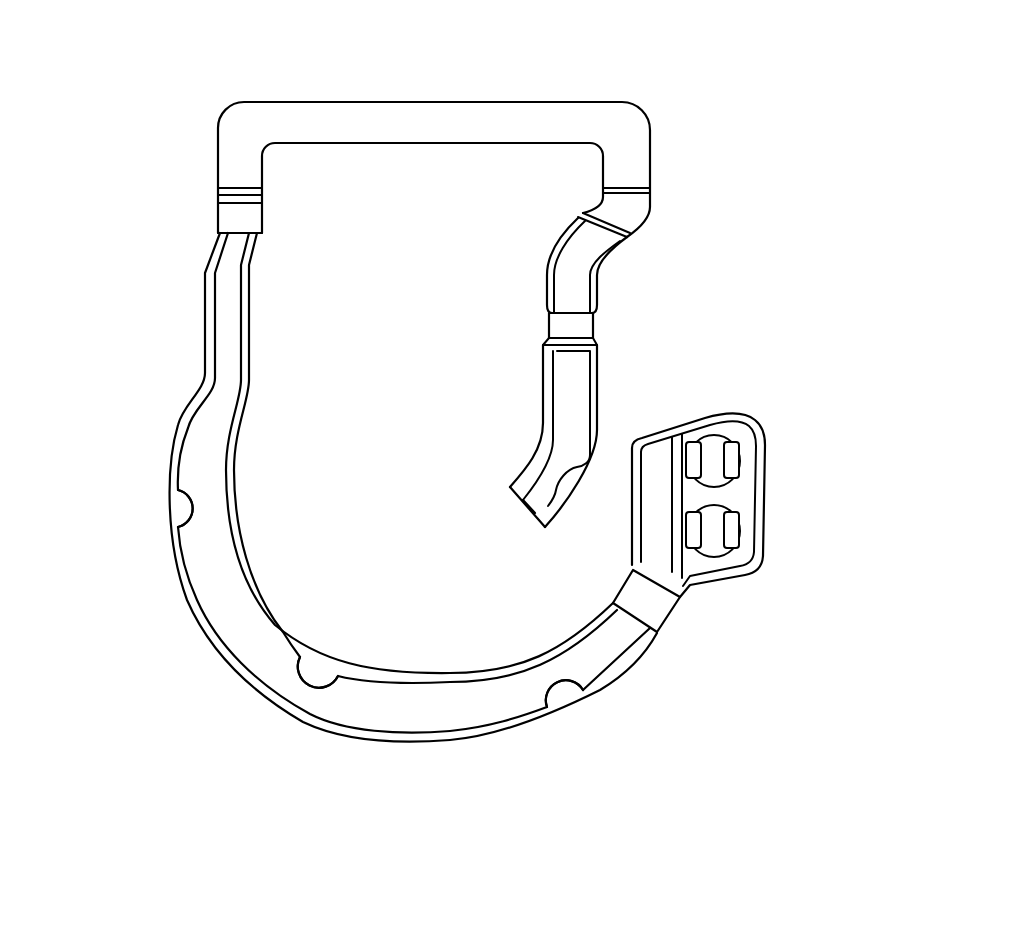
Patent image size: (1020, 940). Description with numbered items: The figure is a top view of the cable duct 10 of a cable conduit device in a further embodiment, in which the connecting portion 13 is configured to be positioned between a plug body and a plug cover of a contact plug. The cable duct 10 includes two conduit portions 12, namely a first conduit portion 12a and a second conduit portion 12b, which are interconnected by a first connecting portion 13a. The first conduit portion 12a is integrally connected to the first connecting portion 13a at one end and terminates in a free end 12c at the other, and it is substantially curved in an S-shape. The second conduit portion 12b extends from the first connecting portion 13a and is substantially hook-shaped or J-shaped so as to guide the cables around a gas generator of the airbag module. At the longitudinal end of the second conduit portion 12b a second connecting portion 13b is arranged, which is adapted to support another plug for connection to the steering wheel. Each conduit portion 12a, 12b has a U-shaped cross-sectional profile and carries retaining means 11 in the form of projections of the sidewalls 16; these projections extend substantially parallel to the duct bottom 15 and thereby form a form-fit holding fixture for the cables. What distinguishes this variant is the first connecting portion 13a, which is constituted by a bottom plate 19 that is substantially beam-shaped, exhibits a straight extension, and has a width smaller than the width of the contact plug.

The cable duct 10 is at (752, 231).
The retaining means 11 is at (575, 327).
The conduit portions 12 is at (393, 509).
The first conduit portion 12a is at (573, 294).
The second conduit portion 12b is at (184, 583).
The free end 12c is at (533, 504).
The connecting portion 13 is at (551, 332).
The first connecting portion 13a is at (518, 118).
The second connecting portion 13b is at (752, 502).
The duct bottom 15 is at (247, 633).
The sidewalls 16 is at (380, 677).
The bottom plate 19 is at (434, 169).